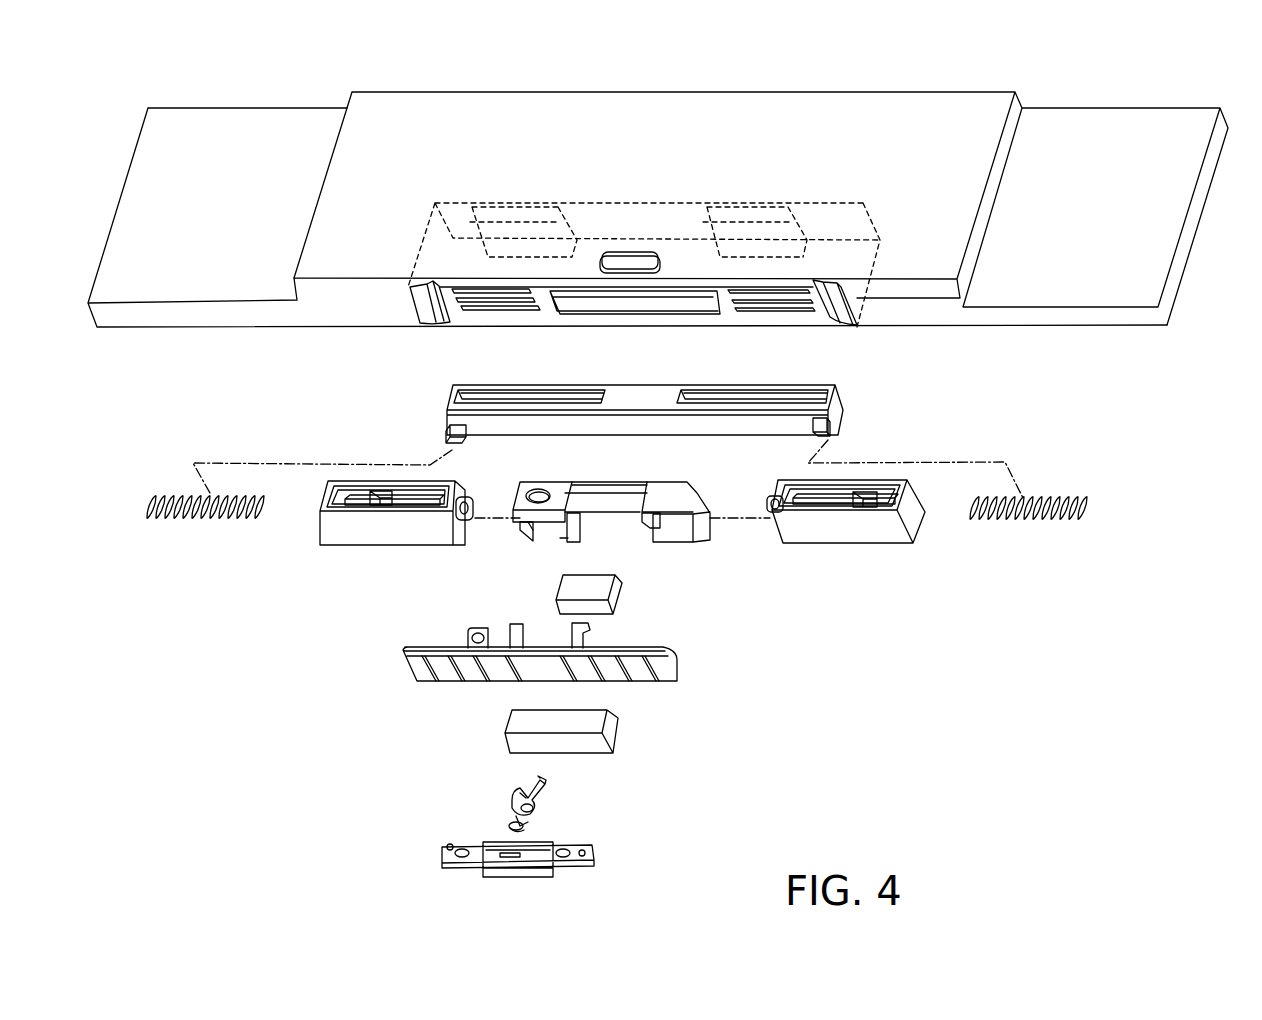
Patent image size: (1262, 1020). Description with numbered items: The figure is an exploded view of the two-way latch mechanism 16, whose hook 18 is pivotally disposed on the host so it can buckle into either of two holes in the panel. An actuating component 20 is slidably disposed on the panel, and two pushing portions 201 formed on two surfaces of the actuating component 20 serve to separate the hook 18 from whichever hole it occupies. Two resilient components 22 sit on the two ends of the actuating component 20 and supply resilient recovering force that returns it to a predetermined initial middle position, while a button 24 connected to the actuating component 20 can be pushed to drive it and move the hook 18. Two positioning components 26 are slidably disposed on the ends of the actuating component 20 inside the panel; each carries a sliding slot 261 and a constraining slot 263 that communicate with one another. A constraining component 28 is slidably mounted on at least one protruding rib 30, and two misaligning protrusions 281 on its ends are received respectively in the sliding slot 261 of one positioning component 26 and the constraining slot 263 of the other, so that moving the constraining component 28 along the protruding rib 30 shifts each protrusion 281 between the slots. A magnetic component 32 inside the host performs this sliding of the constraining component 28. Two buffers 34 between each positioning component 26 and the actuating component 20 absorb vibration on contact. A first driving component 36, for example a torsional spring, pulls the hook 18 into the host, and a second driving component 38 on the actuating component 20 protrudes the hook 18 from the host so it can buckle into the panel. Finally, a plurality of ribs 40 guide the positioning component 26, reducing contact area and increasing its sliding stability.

The two-way latch mechanism 16 is at (1145, 455).
The hook 18 is at (540, 797).
The actuating component 20 is at (612, 538).
The pushing portion 201 is at (568, 543).
The resilient component 22 is at (198, 520).
The button 24 is at (443, 672).
The positioning component 26 is at (350, 533).
The sliding slot 261 is at (422, 510).
The constraining slot 263 is at (380, 497).
The constraining component 28 is at (633, 397).
The protrusion 281 is at (450, 430).
The protruding rib 30 is at (522, 217).
The magnetic component 32 is at (613, 732).
The buffer 34 is at (468, 507).
The first driving component 36 is at (513, 823).
The second driving component 38 is at (615, 595).
The rib 40 is at (470, 295).